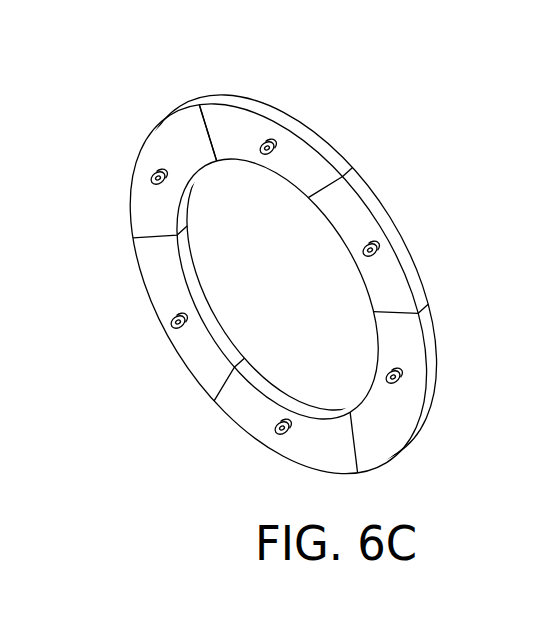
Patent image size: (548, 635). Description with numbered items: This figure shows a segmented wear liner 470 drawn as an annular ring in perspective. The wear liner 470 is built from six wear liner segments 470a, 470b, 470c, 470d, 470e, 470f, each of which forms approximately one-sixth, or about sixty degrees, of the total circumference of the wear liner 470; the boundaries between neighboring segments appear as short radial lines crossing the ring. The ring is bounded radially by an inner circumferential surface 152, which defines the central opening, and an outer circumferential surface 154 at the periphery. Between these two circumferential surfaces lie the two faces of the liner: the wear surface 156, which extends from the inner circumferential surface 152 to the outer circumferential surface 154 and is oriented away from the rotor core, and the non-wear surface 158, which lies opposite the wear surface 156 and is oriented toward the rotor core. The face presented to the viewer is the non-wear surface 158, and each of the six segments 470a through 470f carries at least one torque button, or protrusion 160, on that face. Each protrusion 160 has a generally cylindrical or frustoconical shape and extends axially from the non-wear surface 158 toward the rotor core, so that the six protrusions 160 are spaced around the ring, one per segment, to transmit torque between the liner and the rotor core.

The wear liner 470 is at (211, 80).
The wear liner segment 470a is at (157, 140).
The wear liner segment 470b is at (157, 282).
The wear liner segment 470c is at (237, 392).
The wear liner segment 470d is at (407, 397).
The wear liner segment 470e is at (370, 275).
The wear liner segment 470f is at (308, 163).
The inner circumferential surface 152 is at (297, 402).
The outer circumferential surface 154 is at (253, 107).
The wear surface 156 is at (426, 242).
The non-wear surface 158 is at (249, 140).
The torque button (protrusion) 160 is at (150, 178).